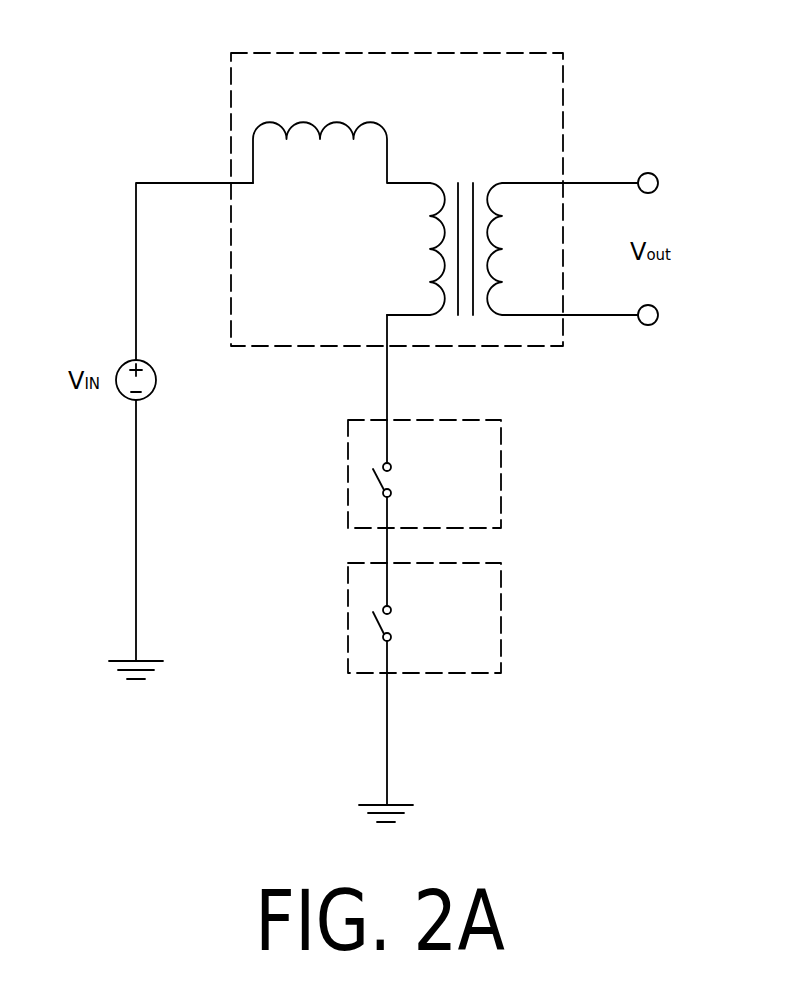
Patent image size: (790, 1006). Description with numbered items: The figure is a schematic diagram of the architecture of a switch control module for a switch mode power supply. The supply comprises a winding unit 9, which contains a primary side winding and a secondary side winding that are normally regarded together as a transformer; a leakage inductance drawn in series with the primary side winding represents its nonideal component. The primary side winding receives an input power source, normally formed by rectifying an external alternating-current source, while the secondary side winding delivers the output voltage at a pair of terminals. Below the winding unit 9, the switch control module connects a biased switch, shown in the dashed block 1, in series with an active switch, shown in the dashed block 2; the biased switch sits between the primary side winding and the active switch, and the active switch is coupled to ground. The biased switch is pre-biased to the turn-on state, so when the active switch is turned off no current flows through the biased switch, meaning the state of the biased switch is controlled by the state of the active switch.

The winding unit 9 is at (563, 88).
The first switch SW_A 1 is at (501, 455).
The second switch SW_B 2 is at (501, 598).